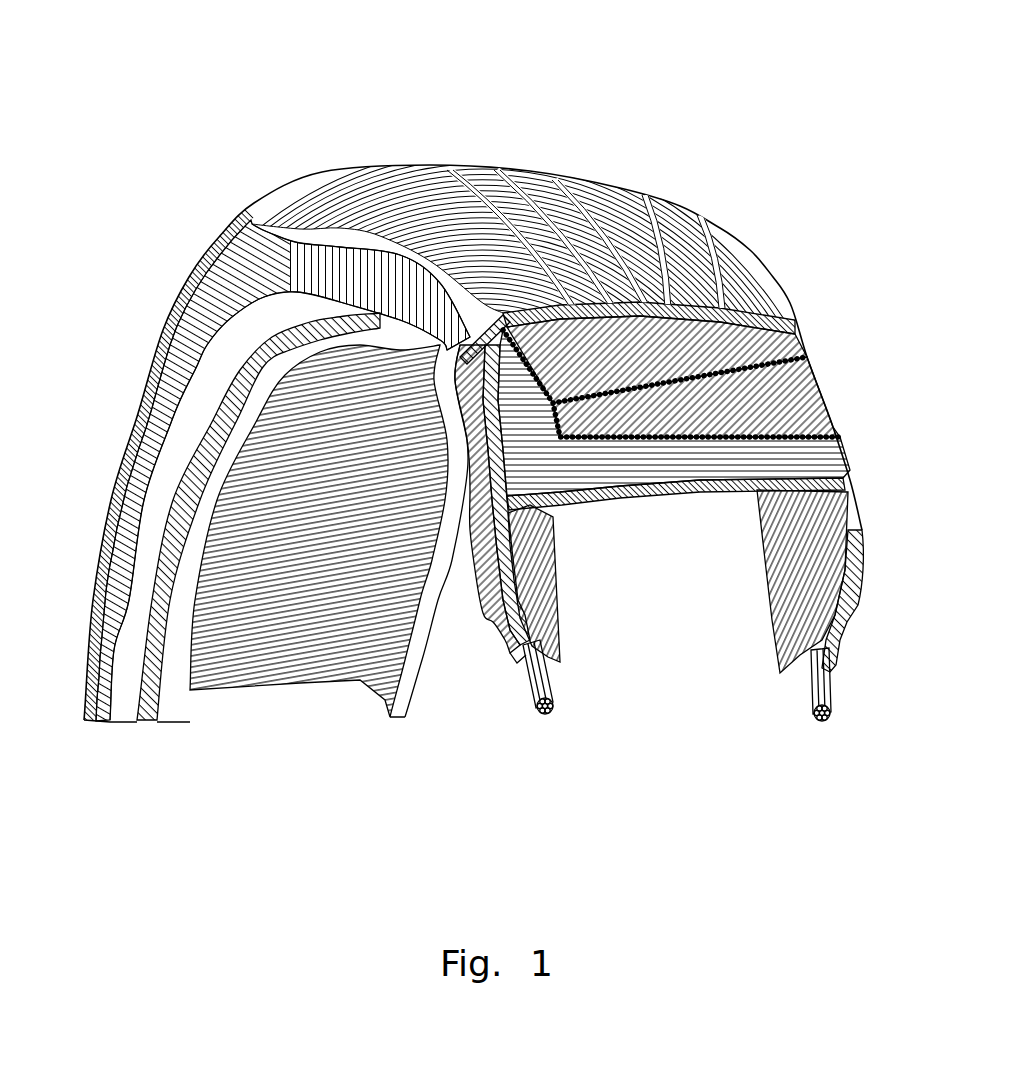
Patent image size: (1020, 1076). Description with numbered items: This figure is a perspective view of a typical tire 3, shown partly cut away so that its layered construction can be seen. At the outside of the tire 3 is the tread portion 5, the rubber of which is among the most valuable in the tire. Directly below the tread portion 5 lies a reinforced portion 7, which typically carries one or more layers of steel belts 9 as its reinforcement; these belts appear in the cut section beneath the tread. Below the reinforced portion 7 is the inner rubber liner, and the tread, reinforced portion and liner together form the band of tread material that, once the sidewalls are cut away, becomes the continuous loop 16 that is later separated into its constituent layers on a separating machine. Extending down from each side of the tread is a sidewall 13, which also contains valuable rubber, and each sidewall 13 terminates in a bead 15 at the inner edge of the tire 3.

The tire 3 is at (205, 215).
The continuous loop 16 is at (473, 536).
The tread portion 5 is at (600, 235).
The steel belts 9 is at (768, 402).
The sidewall 13 is at (180, 421).
The reinforced portion 7 is at (723, 467).
The bead 15 is at (553, 723).